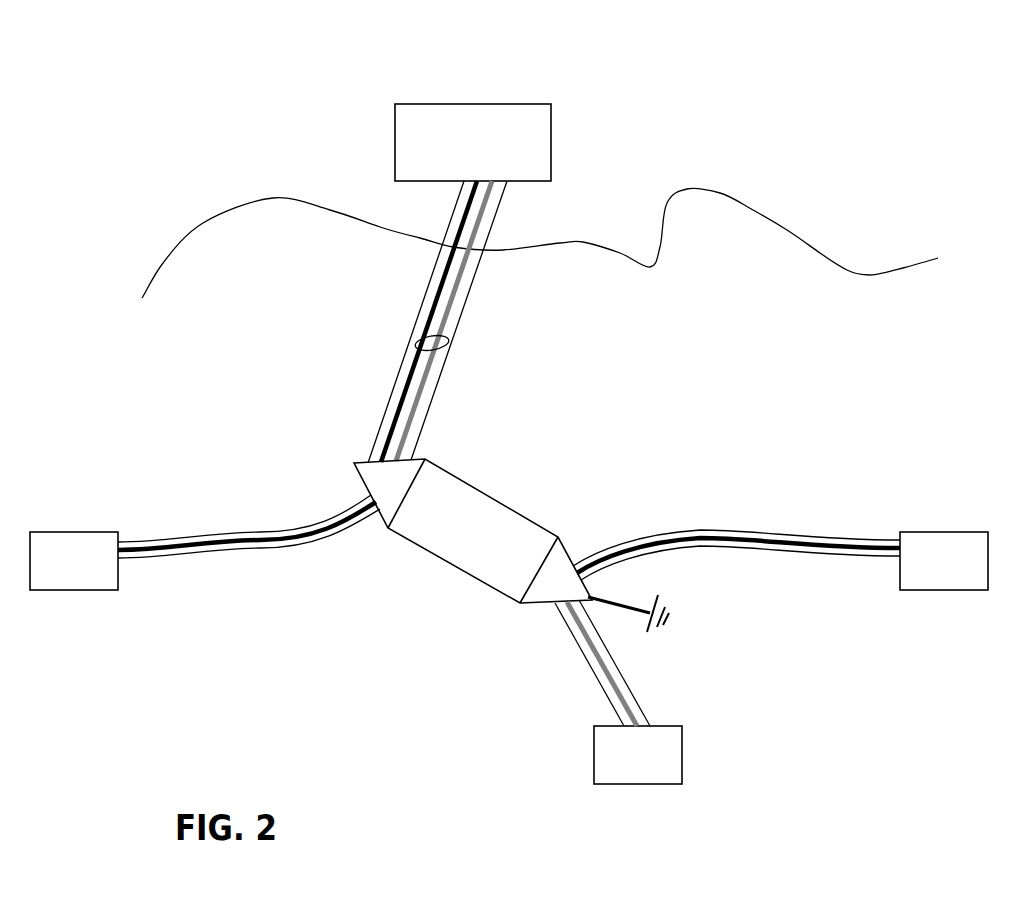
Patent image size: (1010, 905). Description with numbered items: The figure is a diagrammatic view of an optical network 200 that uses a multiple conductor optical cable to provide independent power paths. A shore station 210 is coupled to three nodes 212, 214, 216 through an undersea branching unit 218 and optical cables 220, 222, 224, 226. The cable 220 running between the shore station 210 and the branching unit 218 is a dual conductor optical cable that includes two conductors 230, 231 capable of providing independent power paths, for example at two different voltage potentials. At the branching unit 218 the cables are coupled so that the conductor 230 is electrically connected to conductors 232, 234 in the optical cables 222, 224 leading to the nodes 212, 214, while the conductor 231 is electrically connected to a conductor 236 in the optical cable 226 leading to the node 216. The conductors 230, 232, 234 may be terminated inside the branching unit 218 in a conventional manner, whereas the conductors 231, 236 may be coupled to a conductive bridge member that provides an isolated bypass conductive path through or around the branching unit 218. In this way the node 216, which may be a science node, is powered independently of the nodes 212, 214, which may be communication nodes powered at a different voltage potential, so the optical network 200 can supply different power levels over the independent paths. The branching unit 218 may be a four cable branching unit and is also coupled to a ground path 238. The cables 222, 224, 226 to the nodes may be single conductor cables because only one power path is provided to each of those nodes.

The optical network 200 is at (244, 99).
The shore station 210 is at (395, 145).
The node 212 is at (70, 532).
The node 214 is at (930, 532).
The node 216 is at (594, 768).
The undersea branching unit 218 is at (518, 520).
The optical cable 220 is at (375, 302).
The optical cable 222 is at (273, 504).
The optical cable 224 is at (682, 518).
The optical cable 226 is at (547, 708).
The conductor 230 is at (397, 407).
The conductor 231 is at (448, 310).
The conductor 232 is at (197, 541).
The conductor 234 is at (790, 540).
The conductor 236 is at (594, 650).
The ground path 238 is at (618, 610).